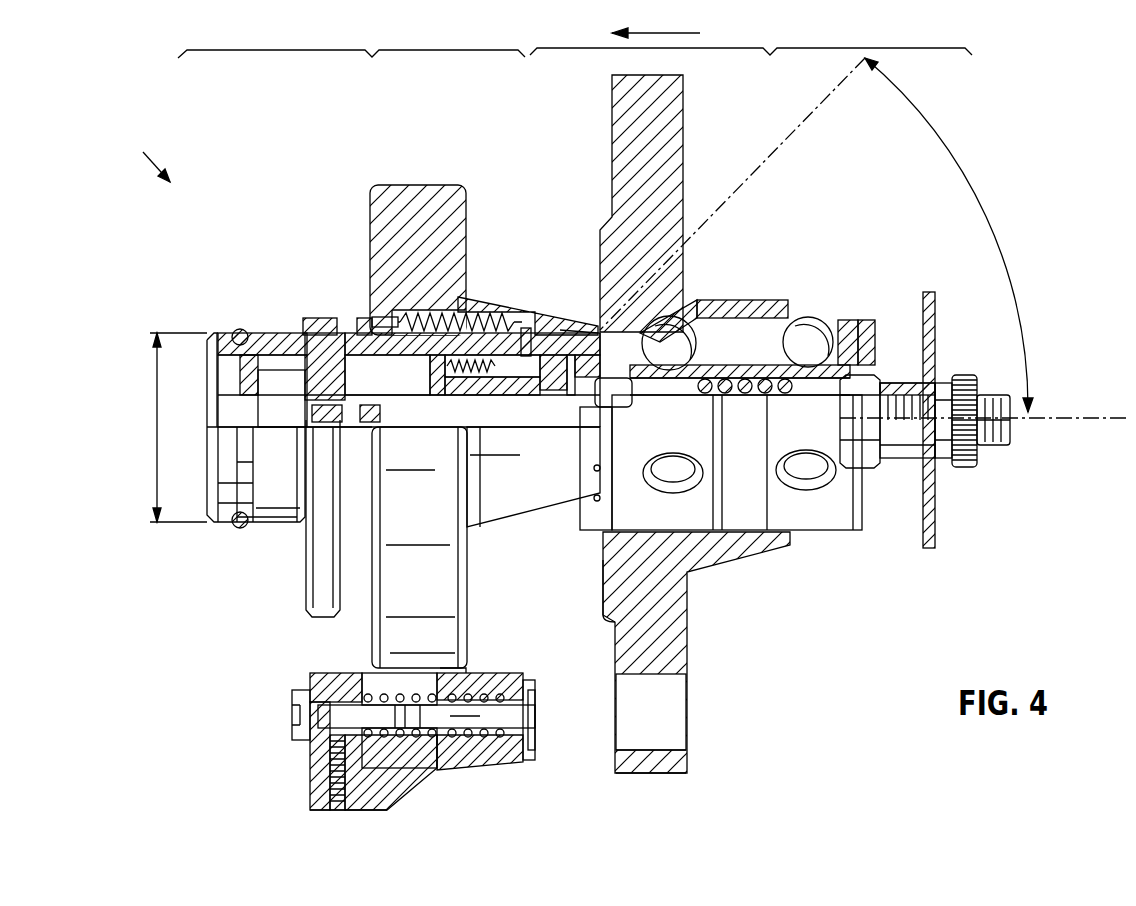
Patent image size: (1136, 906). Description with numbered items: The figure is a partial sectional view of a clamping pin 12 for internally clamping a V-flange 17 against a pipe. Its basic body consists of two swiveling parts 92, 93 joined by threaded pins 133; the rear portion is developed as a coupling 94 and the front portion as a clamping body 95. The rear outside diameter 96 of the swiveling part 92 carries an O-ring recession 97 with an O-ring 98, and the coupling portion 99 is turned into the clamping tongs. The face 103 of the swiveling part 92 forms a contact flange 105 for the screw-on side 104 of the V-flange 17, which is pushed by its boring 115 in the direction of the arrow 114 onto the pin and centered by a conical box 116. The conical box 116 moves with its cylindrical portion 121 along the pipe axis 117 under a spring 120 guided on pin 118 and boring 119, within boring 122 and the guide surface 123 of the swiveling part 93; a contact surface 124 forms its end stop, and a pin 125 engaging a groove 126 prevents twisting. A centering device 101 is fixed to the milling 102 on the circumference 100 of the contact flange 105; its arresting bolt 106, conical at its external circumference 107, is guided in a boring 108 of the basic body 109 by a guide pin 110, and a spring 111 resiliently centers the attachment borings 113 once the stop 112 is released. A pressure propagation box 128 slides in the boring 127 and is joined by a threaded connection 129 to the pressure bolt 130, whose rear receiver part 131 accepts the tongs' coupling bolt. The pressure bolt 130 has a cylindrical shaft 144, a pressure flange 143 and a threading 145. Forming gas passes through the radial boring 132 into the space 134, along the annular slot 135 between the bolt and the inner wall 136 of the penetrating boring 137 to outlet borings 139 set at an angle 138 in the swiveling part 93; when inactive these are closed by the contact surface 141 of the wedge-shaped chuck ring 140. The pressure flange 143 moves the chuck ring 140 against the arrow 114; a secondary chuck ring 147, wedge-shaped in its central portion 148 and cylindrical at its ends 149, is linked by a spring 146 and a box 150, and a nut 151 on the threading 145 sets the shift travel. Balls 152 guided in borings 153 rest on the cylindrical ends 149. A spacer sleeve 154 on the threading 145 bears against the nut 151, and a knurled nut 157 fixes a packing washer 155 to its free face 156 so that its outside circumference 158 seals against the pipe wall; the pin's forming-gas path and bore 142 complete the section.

The clamping pin 12 is at (144, 151).
The V-flange 17 is at (670, 660).
The swiveling part 92 is at (418, 240).
The swiveling part 93 is at (800, 318).
The coupling 94 is at (351, 69).
The clamping body 95 is at (751, 66).
The rear outside diameter 96 is at (157, 410).
The O-ring recession 97 is at (266, 333).
The O-ring 98 is at (236, 330).
The coupling portion 99 is at (322, 603).
The circumference 100 is at (432, 185).
The centering device 101 is at (308, 800).
The milling 102 is at (468, 672).
The face 103 is at (458, 240).
The screw-on side 104 is at (604, 605).
The contact flange 105 is at (452, 212).
The arresting bolt 106 is at (507, 740).
The external circumference 107 is at (528, 750).
The boring 108 is at (428, 738).
The basic body 109 is at (350, 782).
The guide pin 110 is at (392, 720).
The spring 111 is at (470, 742).
The stop 112 is at (330, 758).
The attachment borings 113 is at (667, 750).
The arrow 114 is at (700, 33).
The boring 115 is at (790, 302).
The conical box 116 is at (550, 322).
The pipe axis 117 is at (1120, 416).
The pin 118 is at (392, 320).
The boring 119 is at (526, 328).
The spring 120 is at (437, 318).
The cylindrical portion 121 is at (475, 318).
The boring 122 is at (430, 318).
The guide surface 123 is at (560, 330).
The contact surface 124 is at (603, 318).
The pin 125 is at (533, 312).
The groove 126 is at (532, 305).
The boring 127 is at (224, 418).
The pressure propagation box 128 is at (306, 326).
The threaded connection 129 is at (318, 345).
The pressure bolt 130 is at (820, 440).
The receiver part 131 is at (242, 385).
The radial boring 132 is at (362, 325).
The threaded pins 133 is at (440, 345).
The space 134 is at (377, 379).
The annular slot 135 is at (505, 386).
The inner wall 136 is at (472, 374).
The penetrating boring 137 is at (582, 402).
The angle 138 is at (981, 214).
The outlet borings 139 is at (645, 305).
The chuck ring 140 is at (655, 322).
The contact surface 141 is at (580, 387).
The bore 142 is at (665, 466).
The pressure flange 143 is at (700, 312).
The cylindrical shaft 144 is at (745, 470).
The threading 145 is at (1012, 430).
The spring 146 is at (753, 505).
The secondary chuck ring 147 is at (902, 380).
The central portion 148 is at (830, 340).
The cylindrical ends 149 is at (680, 322).
The box 150 is at (765, 396).
The nut 151 is at (872, 462).
The balls 152 is at (722, 318).
The borings 153 is at (735, 320).
The spacer sleeve 154 is at (916, 442).
The packing washer 155 is at (933, 518).
The free face 156 is at (918, 442).
The knurled nut 157 is at (970, 458).
The outside circumference 158 is at (931, 292).